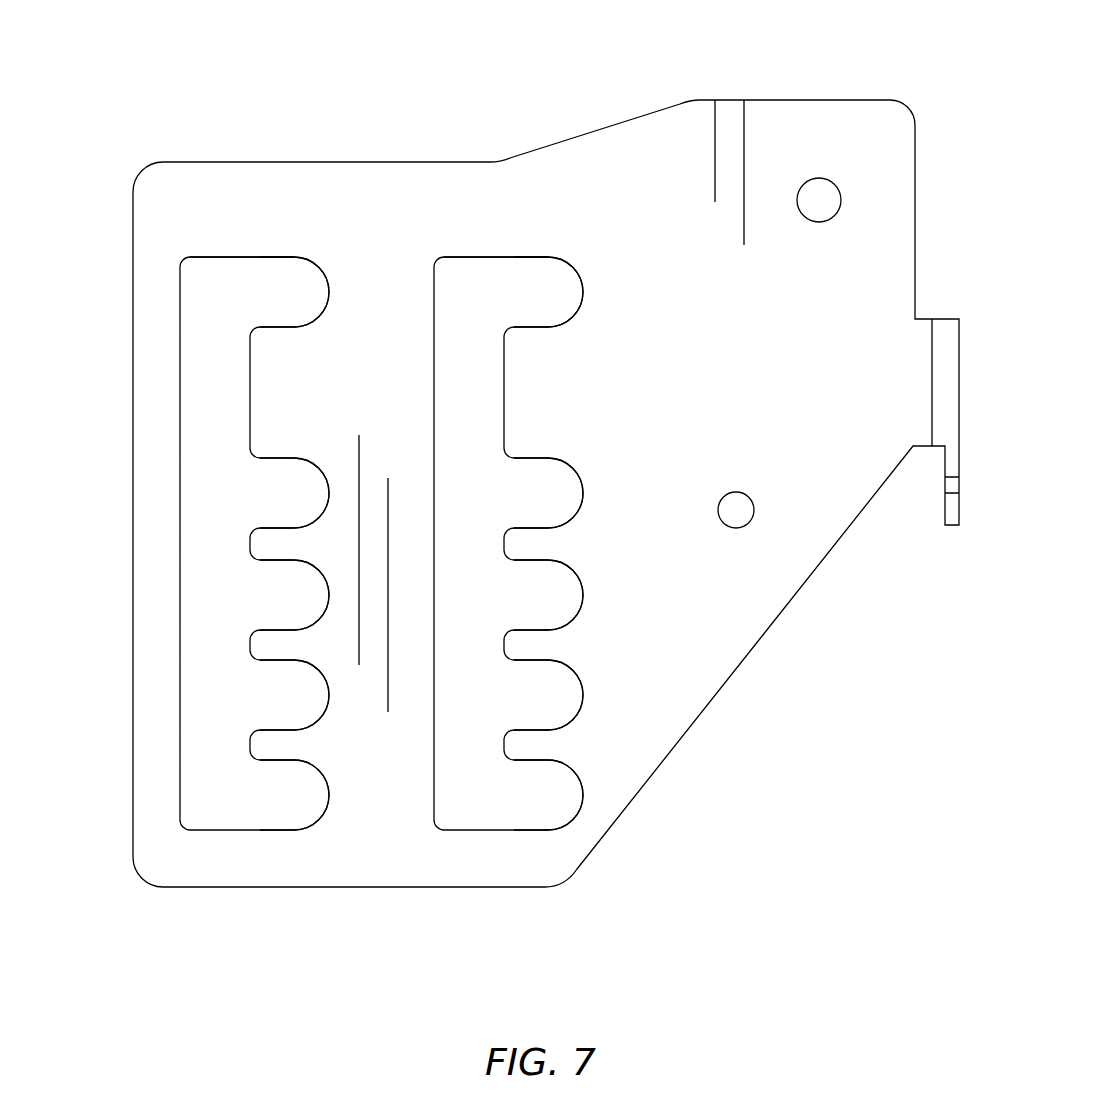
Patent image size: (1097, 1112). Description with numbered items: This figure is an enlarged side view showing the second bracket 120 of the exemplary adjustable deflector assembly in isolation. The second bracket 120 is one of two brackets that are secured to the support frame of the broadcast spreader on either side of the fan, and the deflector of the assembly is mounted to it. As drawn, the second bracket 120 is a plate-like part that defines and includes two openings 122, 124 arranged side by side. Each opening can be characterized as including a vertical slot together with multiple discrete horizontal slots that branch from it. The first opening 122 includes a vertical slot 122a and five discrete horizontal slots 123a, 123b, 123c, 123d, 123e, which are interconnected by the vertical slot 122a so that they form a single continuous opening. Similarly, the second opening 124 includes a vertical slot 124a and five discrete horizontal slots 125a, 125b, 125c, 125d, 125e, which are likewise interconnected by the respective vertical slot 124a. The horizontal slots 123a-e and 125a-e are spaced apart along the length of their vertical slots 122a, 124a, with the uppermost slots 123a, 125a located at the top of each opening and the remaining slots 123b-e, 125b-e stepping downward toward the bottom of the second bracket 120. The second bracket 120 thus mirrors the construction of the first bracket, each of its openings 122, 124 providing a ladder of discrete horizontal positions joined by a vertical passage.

The second bracket 120 is at (812, 100).
The opening 122 is at (180, 310).
The vertical slot 122a is at (220, 290).
The horizontal slot 123a is at (303, 258).
The horizontal slot 123b is at (275, 462).
The horizontal slot 123c is at (275, 562).
The horizontal slot 123d is at (275, 662).
The horizontal slot 123e is at (275, 762).
The opening 124 is at (435, 297).
The vertical slot 124a is at (478, 283).
The horizontal slot 125a is at (579, 272).
The horizontal slot 125b is at (583, 498).
The horizontal slot 125c is at (583, 598).
The horizontal slot 125d is at (583, 700).
The horizontal slot 125e is at (583, 798).